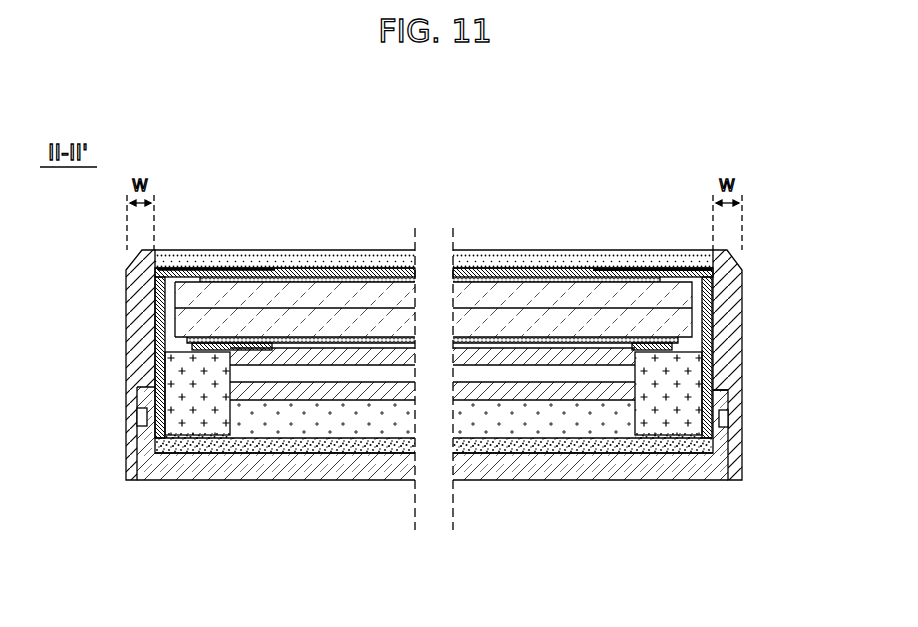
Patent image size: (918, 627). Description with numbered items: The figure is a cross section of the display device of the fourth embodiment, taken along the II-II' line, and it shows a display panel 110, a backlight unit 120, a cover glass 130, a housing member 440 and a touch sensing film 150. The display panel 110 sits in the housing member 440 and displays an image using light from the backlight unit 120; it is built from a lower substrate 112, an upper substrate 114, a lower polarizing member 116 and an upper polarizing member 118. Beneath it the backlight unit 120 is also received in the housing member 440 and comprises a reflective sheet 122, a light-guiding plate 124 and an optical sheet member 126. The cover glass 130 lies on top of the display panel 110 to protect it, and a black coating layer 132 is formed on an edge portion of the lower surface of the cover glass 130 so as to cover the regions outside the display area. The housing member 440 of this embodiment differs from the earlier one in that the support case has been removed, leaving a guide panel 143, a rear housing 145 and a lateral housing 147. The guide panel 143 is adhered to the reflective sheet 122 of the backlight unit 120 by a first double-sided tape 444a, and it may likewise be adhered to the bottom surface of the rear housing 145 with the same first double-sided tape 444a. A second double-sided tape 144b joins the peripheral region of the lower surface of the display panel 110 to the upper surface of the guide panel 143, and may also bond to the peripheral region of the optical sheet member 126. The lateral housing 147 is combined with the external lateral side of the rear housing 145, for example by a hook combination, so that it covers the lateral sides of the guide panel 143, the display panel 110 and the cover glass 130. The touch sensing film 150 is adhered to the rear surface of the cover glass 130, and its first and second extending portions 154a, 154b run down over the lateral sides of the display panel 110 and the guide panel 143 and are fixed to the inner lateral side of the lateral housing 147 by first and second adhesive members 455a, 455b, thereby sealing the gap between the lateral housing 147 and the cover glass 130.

The display panel 110 is at (400, 189).
The lower substrate 112 is at (357, 322).
The upper substrate 114 is at (315, 297).
The lower polarizing member 116 is at (390, 340).
The upper polarizing member 118 is at (272, 282).
The backlight unit 120 is at (500, 563).
The reflective sheet 122 is at (589, 447).
The light-guiding plate 124 is at (547, 418).
The optical sheet member 126 is at (500, 408).
The cover glass 130 is at (227, 257).
The black coating layer 132 is at (187, 270).
The guide panel 143 is at (207, 425).
The second double-sided tape 144b is at (672, 347).
The rear housing 145 is at (327, 470).
The lateral housing 147 is at (128, 470).
The touch sensing film 150 is at (512, 277).
The first extending portion 154a is at (158, 322).
The second extending portion 154b is at (710, 303).
The housing member 440 is at (325, 567).
The first double-sided tape 444a is at (658, 443).
The first adhesive member 455a is at (157, 367).
The second adhesive member 455b is at (710, 378).